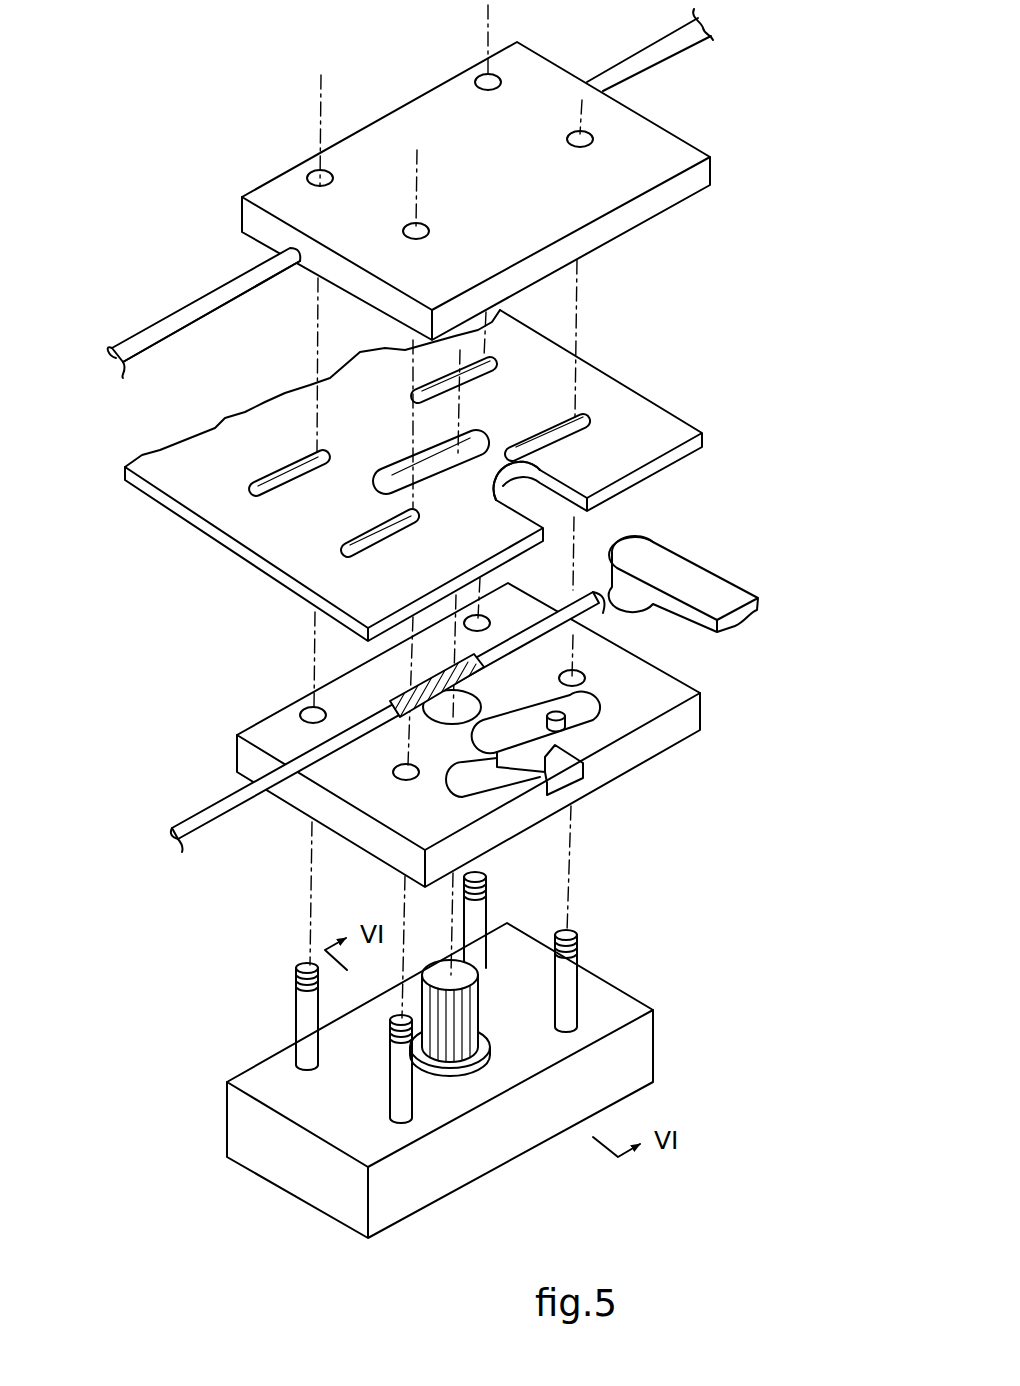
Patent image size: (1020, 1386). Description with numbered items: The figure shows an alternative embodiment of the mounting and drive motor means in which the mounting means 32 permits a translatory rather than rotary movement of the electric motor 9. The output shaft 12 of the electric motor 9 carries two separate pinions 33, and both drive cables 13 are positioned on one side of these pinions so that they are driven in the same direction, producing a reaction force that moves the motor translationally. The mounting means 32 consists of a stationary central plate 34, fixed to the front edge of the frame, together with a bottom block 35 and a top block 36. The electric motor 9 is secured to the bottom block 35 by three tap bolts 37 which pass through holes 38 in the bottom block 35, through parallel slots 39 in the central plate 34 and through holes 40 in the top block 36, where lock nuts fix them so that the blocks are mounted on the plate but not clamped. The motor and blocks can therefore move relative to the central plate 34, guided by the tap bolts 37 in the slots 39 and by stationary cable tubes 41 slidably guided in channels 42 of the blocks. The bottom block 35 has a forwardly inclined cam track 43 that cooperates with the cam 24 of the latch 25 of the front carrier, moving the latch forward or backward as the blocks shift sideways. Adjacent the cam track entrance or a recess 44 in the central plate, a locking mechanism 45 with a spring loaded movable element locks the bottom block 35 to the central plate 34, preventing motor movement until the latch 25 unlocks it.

The electric motor 9 is at (640, 1053).
The output shaft 12 is at (490, 1007).
The drive cables 13 is at (262, 268).
The cam 24 is at (640, 598).
The latch 25 is at (643, 547).
The mounting means 32 is at (197, 628).
The pinions 33 is at (482, 990).
The central plate 34 is at (650, 415).
The bottom block 35 is at (690, 723).
The top block 36 is at (697, 180).
The tap bolts 37 is at (292, 1003).
The holes 38 is at (298, 714).
The parallel slots 39 is at (354, 542).
The holes 40 is at (305, 177).
The cable tubes 41 is at (185, 818).
The channels 42 is at (290, 249).
The cam track 43 is at (195, 297).
The recess 44 is at (543, 500).
The locking mechanism 45 is at (548, 750).